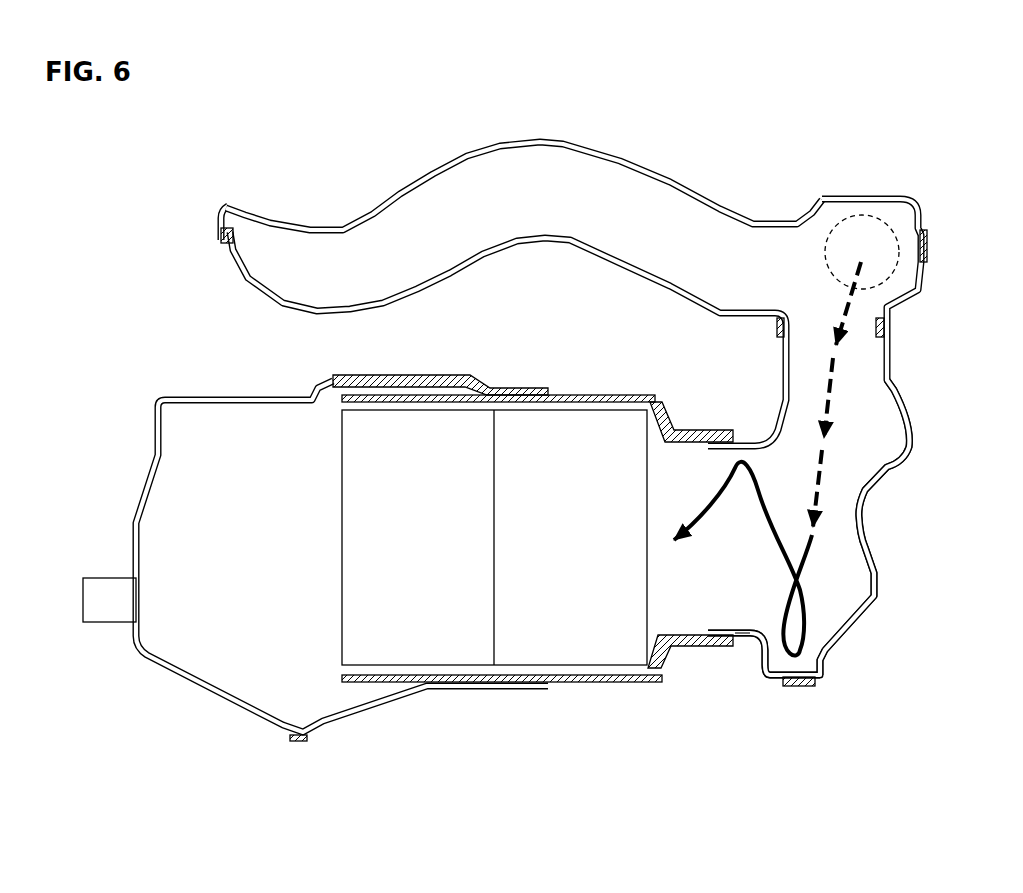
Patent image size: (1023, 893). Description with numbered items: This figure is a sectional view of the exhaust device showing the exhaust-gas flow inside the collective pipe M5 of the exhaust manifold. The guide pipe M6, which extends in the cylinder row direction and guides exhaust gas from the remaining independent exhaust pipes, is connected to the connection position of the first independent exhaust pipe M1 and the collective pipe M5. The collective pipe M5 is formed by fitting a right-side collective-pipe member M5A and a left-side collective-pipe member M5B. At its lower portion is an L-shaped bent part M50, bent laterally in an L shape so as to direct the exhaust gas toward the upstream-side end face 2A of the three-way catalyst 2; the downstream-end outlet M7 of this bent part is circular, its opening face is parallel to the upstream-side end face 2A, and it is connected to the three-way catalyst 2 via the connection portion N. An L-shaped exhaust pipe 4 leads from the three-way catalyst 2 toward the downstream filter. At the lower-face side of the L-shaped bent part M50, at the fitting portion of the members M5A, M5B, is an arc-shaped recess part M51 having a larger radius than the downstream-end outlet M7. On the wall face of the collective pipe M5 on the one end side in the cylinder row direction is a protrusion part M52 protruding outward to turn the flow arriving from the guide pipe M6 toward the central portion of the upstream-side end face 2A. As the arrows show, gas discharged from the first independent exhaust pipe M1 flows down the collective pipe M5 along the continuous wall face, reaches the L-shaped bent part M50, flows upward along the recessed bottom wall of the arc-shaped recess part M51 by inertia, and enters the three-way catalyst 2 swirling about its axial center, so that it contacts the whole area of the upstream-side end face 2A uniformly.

The three-way catalyst 2 is at (579, 652).
The upstream-side end face 2A is at (650, 465).
The L-shaped exhaust pipe 4 is at (338, 697).
The first independent exhaust pipe M1 is at (856, 205).
The collective pipe M5 is at (884, 343).
The L-shaped bent part M50 is at (877, 602).
The arc-shaped recess part M51 is at (792, 665).
The protrusion part M52 is at (898, 437).
The right-side collective-pipe member M5A is at (825, 647).
The left-side collective-pipe member M5B is at (773, 678).
The guide pipe M6 is at (562, 160).
The downstream-end outlet M7 is at (700, 640).
The connection portion N is at (735, 640).